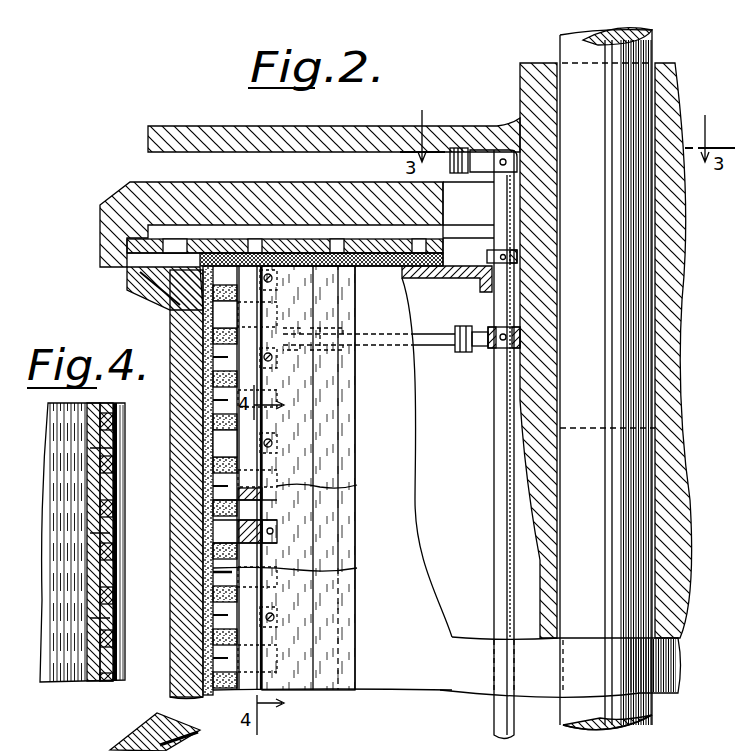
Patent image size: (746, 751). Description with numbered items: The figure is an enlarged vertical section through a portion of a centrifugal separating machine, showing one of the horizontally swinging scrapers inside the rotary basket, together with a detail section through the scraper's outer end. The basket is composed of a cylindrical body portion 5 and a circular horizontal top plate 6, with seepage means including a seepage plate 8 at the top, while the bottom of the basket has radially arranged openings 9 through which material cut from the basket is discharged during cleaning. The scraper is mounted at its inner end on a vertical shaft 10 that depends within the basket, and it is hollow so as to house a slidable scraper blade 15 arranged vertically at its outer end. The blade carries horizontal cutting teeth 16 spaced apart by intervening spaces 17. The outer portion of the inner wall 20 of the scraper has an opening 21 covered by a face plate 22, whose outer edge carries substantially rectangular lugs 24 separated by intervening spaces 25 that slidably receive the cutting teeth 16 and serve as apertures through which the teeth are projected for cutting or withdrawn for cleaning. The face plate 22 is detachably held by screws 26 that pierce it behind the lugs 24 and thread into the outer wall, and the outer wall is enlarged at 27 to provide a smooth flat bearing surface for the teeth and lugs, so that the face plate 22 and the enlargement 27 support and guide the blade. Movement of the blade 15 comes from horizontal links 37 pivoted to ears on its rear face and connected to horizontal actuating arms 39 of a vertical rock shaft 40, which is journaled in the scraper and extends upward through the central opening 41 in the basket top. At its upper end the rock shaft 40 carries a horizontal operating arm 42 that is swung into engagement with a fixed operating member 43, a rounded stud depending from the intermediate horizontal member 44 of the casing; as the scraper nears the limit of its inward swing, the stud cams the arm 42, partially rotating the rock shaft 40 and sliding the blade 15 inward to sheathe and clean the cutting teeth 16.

In FIG. 2, the cylindrical body portion 5 is at (172, 464).
In FIG. 2, the top plate 6 is at (308, 162).
In FIG. 2, the seepage plate 8 is at (362, 270).
In FIG. 2, the openings 9 is at (212, 572).
In FIG. 2, the vertical shaft 10 is at (635, 375).
In FIG. 2, the scraper blade 15 is at (306, 523).
In FIG. 2, the cutting teeth 16 is at (225, 445).
In FIG. 2, the intervening spaces 17 is at (225, 336).
In FIG. 2, the inner wall 20 is at (478, 645).
In FIG. 2, the opening 21 is at (350, 548).
In FIG. 2, the face plate 22 is at (326, 455).
In FIG. 4, the face plate 22 is at (124, 436).
In FIG. 2, the lugs 24 is at (212, 531).
In FIG. 4, the lugs 24 is at (118, 408).
In FIG. 4, the intervening spaces 25 is at (100, 441).
In FIG. 2, the screws 26 is at (284, 442).
In FIG. 4, the screws 26 is at (112, 448).
In FIG. 4, the enlargement 27 is at (88, 500).
In FIG. 2, the horizontal links 37 is at (428, 338).
In FIG. 2, the horizontal actuating arms 39 is at (462, 320).
In FIG. 2, the vertical rock shaft 40 is at (492, 312).
In FIG. 2, the central opening 41 is at (468, 224).
In FIG. 2, the horizontal operating arm 42 is at (488, 150).
In FIG. 2, the fixed operating member 43 is at (453, 148).
In FIG. 2, the intermediate horizontal member 44 is at (394, 112).